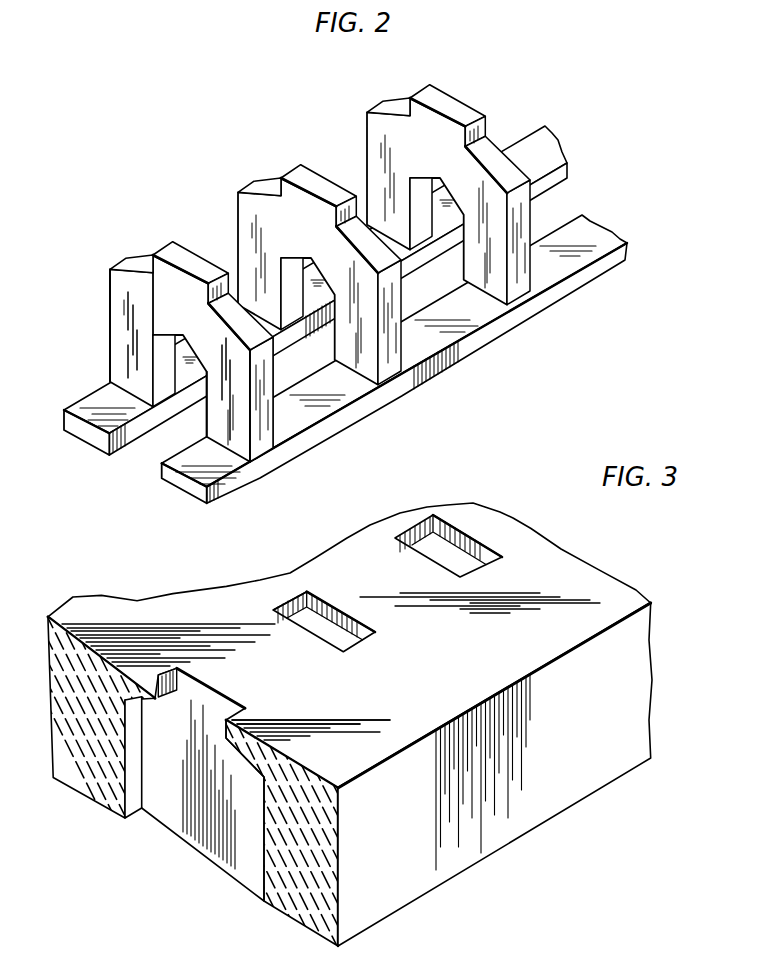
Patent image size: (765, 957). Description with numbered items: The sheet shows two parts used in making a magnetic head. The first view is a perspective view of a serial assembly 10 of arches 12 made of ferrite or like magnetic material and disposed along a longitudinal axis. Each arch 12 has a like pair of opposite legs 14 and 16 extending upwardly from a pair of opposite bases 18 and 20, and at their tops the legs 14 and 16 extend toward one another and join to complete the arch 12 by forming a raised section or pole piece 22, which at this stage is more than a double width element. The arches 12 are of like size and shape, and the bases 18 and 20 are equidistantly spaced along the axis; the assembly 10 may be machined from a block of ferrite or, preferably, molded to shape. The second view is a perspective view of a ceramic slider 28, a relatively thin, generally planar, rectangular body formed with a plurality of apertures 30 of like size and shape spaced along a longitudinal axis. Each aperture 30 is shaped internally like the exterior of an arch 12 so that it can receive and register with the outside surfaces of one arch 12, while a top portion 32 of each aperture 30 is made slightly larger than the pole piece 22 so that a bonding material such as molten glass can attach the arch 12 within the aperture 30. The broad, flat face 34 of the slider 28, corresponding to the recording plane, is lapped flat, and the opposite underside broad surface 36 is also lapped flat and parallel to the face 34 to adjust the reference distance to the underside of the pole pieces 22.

In FIG. 2, the serial assembly of arches 10 is at (304, 149).
In FIG. 2, the arch 12 is at (125, 257).
In FIG. 2, the leg 14 is at (111, 347).
In FIG. 2, the leg 16 is at (263, 435).
In FIG. 2, the base 18 is at (70, 403).
In FIG. 2, the base 20 is at (164, 483).
In FIG. 2, the pole piece 22 is at (179, 248).
In FIG. 3, the ceramic slider 28 is at (660, 697).
In FIG. 3, the aperture 30 is at (226, 700).
In FIG. 3, the top portion of aperture 32 is at (331, 601).
In FIG. 3, the flat face 34 is at (369, 702).
In FIG. 3, the underside broad surface 36 is at (572, 816).